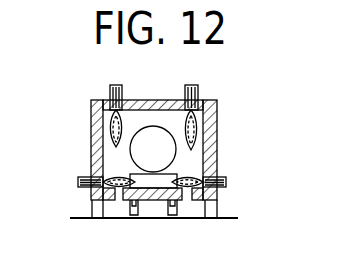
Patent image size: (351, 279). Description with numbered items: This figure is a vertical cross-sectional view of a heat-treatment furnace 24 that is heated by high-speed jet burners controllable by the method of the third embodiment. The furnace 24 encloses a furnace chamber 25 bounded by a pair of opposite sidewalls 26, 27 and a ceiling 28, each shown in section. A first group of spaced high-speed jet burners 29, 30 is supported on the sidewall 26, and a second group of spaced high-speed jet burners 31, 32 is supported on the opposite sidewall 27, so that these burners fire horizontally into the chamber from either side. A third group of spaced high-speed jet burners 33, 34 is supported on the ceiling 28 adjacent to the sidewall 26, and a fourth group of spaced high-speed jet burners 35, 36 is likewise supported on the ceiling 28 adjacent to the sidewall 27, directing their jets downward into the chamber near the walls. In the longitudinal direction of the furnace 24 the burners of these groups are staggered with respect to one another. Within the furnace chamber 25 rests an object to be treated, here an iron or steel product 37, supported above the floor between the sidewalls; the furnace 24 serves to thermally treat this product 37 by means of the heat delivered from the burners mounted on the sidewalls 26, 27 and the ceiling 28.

The heat-treatment furnace 24 is at (218, 125).
The furnace chamber 25 is at (140, 115).
The sidewall 26 is at (215, 152).
The sidewall 27 is at (96, 125).
The ceiling 28 is at (172, 100).
The high-speed jet burner 29 is at (224, 187).
The high-speed jet burner 30 is at (187, 182).
The high-speed jet burner 31 is at (80, 188).
The high-speed jet burner 32 is at (119, 182).
The high-speed jet burner 33 is at (200, 90).
The high-speed jet burner 34 is at (190, 130).
The high-speed jet burner 35 is at (107, 89).
The high-speed jet burner 36 is at (115, 128).
The iron or steel product 37 is at (135, 153).